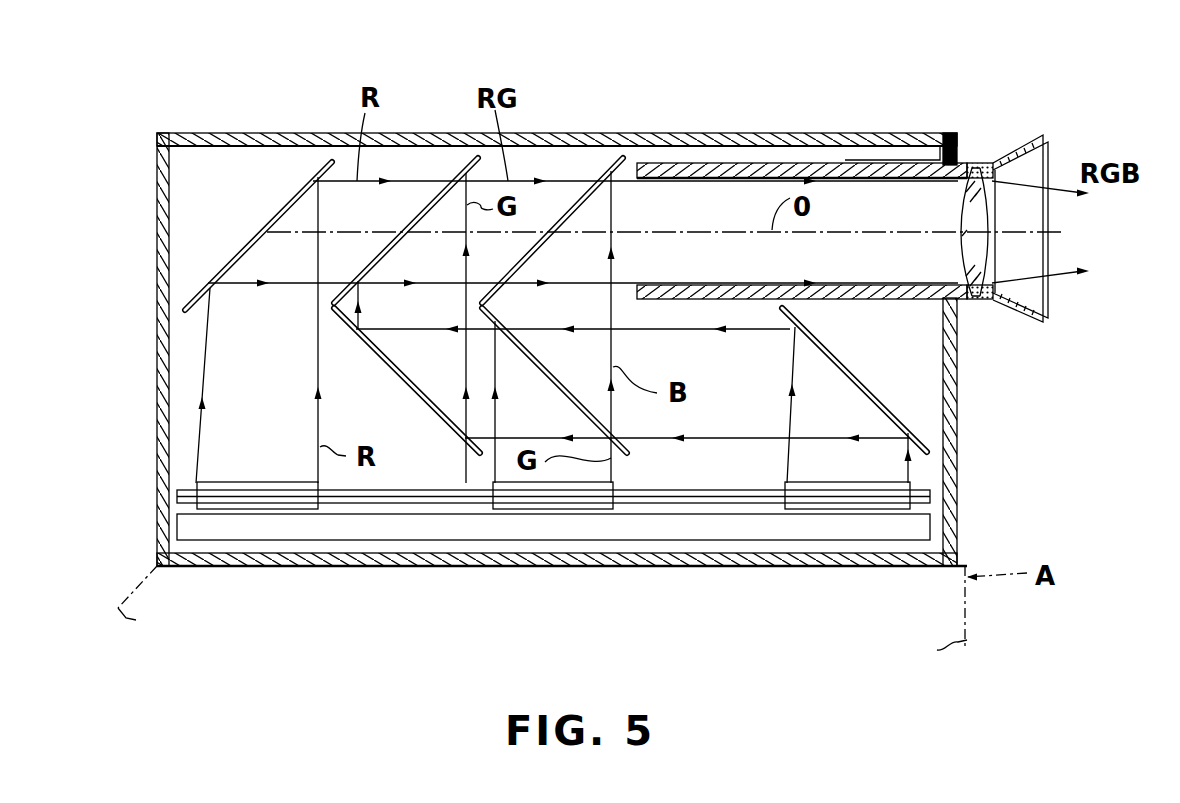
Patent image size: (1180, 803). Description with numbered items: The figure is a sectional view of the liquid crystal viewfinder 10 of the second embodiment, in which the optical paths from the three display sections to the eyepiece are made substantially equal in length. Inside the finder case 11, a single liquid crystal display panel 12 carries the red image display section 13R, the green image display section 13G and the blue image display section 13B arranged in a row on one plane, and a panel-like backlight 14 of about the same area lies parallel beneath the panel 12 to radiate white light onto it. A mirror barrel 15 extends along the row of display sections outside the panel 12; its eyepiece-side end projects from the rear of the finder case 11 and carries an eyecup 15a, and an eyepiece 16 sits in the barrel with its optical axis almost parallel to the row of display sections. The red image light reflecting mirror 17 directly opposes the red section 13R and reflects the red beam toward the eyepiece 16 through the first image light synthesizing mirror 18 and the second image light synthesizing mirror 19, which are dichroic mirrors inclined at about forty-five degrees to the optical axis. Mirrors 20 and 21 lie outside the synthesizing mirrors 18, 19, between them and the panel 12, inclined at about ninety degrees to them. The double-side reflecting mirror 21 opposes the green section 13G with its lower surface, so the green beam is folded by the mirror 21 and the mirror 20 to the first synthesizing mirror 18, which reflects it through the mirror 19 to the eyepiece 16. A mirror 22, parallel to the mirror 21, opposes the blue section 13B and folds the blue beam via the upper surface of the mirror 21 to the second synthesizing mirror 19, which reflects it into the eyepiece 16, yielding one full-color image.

The liquid crystal viewfinder 10 is at (626, 327).
The finder case 11 is at (730, 140).
The liquid crystal display panel 12 is at (935, 485).
The red image display section 13R is at (268, 510).
The green image display section 13G is at (572, 510).
The blue image display section 13B is at (848, 510).
The backlight 14 is at (433, 530).
The mirror barrel 15 is at (847, 160).
The eyecup 15a is at (1037, 320).
The eyepiece 16 is at (982, 300).
The red image light reflecting mirror 17 is at (308, 186).
The first image light synthesizing mirror 18 is at (448, 189).
The second image light synthesizing mirror 19 is at (591, 190).
The mirror 20 is at (385, 359).
The double-side reflecting mirror 21 is at (542, 371).
The mirror 22 is at (867, 390).